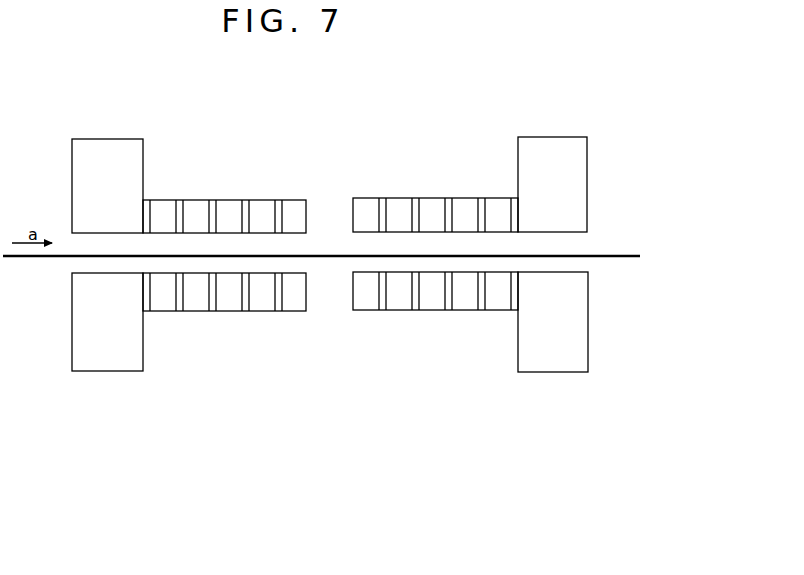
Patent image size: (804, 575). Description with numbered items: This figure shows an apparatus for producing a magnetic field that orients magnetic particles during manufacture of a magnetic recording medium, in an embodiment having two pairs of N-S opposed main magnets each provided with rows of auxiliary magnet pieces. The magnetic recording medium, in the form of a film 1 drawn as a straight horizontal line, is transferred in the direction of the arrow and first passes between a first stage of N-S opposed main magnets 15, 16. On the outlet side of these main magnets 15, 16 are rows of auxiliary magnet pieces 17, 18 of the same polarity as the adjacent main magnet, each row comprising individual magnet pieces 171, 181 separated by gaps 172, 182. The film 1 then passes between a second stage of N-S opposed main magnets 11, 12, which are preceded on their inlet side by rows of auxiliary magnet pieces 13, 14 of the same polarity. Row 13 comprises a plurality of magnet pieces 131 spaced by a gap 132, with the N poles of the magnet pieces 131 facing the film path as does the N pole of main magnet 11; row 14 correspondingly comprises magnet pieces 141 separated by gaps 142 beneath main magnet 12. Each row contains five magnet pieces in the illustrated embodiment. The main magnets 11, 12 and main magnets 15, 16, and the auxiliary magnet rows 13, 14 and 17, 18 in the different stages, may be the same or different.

The film 1 is at (612, 250).
The main magnet 11 is at (582, 327).
The main magnet 12 is at (580, 180).
The auxiliary magnet row 13 is at (433, 342).
The magnet piece 131 is at (458, 302).
The gap 132 is at (415, 302).
The auxiliary magnet row 14 is at (430, 158).
The small magnet 141 is at (420, 198).
The small magnet 142 is at (480, 198).
The main magnet 15 is at (85, 366).
The main magnet 16 is at (78, 142).
The auxiliary magnet row 17 is at (235, 354).
The small magnet 171 is at (288, 311).
The small magnet 172 is at (248, 302).
The auxiliary magnet row 18 is at (233, 160).
The small magnet 181 is at (272, 200).
The small magnet 182 is at (181, 200).